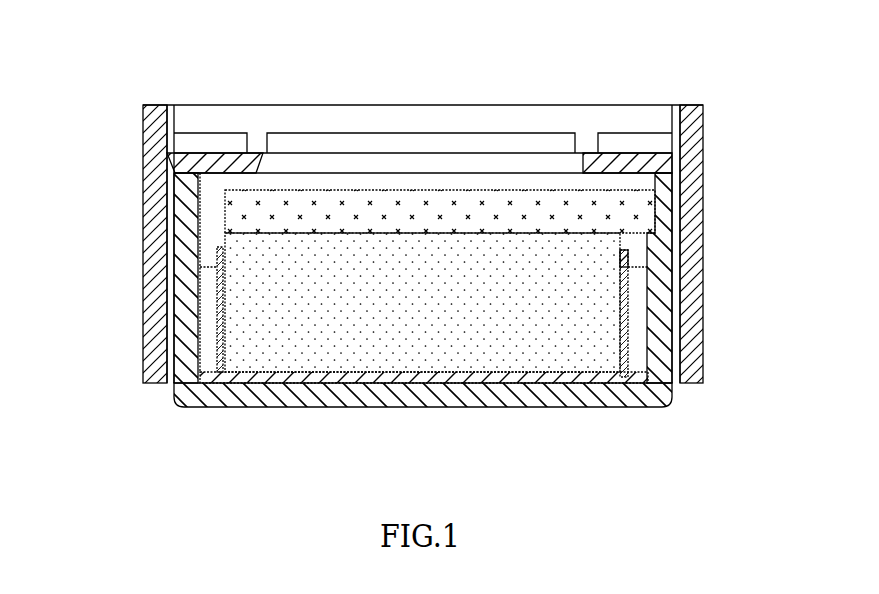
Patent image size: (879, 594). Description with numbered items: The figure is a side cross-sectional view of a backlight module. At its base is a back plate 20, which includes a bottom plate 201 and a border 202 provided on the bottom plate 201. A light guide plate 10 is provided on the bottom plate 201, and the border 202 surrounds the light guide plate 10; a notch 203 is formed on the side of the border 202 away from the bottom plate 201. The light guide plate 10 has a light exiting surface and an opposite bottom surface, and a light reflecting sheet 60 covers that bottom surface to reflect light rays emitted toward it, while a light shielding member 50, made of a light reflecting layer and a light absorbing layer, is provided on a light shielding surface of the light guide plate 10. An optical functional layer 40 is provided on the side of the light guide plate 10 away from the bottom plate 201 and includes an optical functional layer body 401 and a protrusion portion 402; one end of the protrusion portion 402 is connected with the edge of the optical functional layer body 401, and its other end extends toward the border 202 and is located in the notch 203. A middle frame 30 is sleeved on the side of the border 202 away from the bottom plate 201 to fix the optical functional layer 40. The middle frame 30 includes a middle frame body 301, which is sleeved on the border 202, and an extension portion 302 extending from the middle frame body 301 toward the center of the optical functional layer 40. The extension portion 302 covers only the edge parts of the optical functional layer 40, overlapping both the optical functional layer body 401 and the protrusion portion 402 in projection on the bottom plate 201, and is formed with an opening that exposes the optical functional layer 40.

The light guide plate 10 is at (467, 378).
The back plate 20 is at (492, 305).
The bottom plate 201 is at (665, 394).
The border 202 is at (655, 305).
The notch 203 is at (662, 225).
The middle frame 30 is at (400, 244).
The middle frame body 301 is at (178, 190).
The extension portion 302 is at (210, 158).
The optical functional layer 40 is at (419, 129).
The optical functional layer body 401 is at (507, 213).
The protrusion portion 402 is at (655, 158).
The light shielding member 50 is at (622, 375).
The light reflecting sheet 60 is at (535, 382).